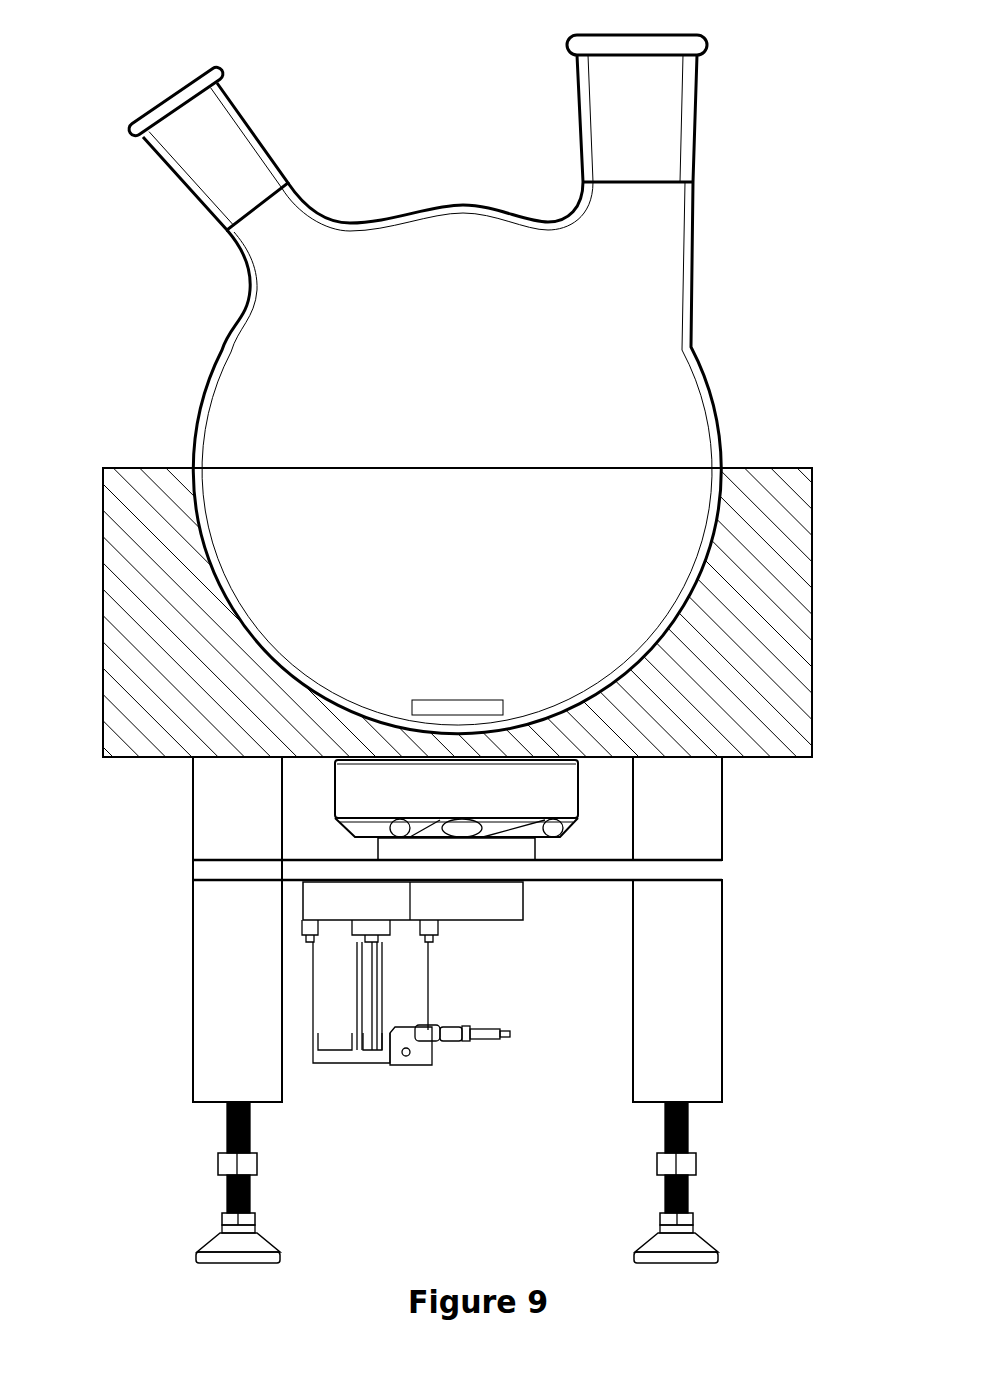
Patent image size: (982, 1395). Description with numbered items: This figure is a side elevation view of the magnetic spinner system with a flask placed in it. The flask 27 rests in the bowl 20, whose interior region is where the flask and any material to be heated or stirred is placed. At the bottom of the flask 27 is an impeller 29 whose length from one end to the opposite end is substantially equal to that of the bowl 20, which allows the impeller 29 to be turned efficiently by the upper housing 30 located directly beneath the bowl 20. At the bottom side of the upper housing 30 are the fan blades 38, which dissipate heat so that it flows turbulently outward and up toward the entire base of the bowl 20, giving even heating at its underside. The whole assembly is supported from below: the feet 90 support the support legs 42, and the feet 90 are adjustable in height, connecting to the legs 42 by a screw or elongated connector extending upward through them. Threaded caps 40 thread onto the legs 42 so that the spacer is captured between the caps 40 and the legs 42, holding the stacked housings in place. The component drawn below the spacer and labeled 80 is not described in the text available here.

The bowl 20 is at (123, 490).
The flask 27 is at (278, 248).
The impeller 29 is at (438, 703).
The upper housing 30 is at (565, 785).
The fan blades 38 is at (537, 827).
The threaded caps 40 is at (690, 815).
The support legs 42 is at (690, 988).
The actuator assembly 80 is at (403, 988).
The feet 90 is at (667, 1245).